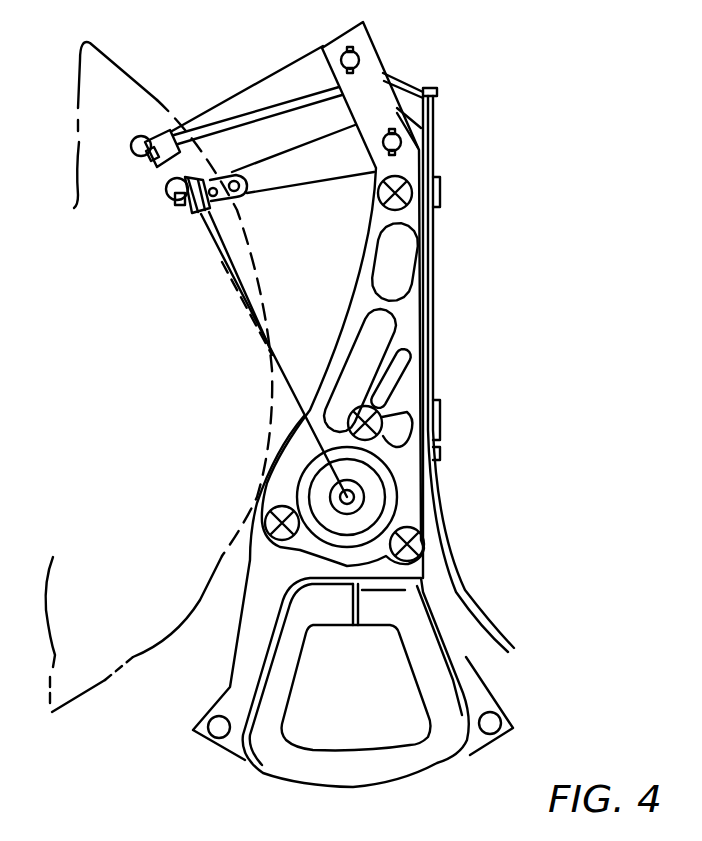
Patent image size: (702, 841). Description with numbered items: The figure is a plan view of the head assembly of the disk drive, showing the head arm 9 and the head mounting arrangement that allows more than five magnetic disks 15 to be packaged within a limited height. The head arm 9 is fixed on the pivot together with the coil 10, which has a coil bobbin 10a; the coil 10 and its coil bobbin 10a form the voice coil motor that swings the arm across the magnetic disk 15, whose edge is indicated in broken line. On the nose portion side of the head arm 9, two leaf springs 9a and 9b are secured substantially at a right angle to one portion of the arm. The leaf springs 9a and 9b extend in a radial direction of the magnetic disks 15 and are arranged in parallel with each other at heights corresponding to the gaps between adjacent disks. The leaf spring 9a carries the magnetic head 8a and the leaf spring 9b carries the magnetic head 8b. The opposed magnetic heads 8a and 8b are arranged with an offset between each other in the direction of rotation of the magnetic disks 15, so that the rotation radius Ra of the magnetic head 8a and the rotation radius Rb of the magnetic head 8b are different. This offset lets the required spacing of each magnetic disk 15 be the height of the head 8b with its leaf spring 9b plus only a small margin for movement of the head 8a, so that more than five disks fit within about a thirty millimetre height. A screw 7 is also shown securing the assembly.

The screw 7 is at (410, 547).
The magnetic head 8a is at (163, 170).
The magnetic head 8b is at (185, 212).
The head arm 9 is at (412, 328).
The leaf spring 9a is at (268, 80).
The leaf spring 9b is at (332, 172).
The coil 10 is at (440, 760).
The coil bobbin 10a is at (488, 694).
The magnetic disk 15 is at (143, 657).
The rotation radius of magnetic head 8a Ra is at (212, 240).
The rotation radius of magnetic head 8b Rb is at (247, 237).